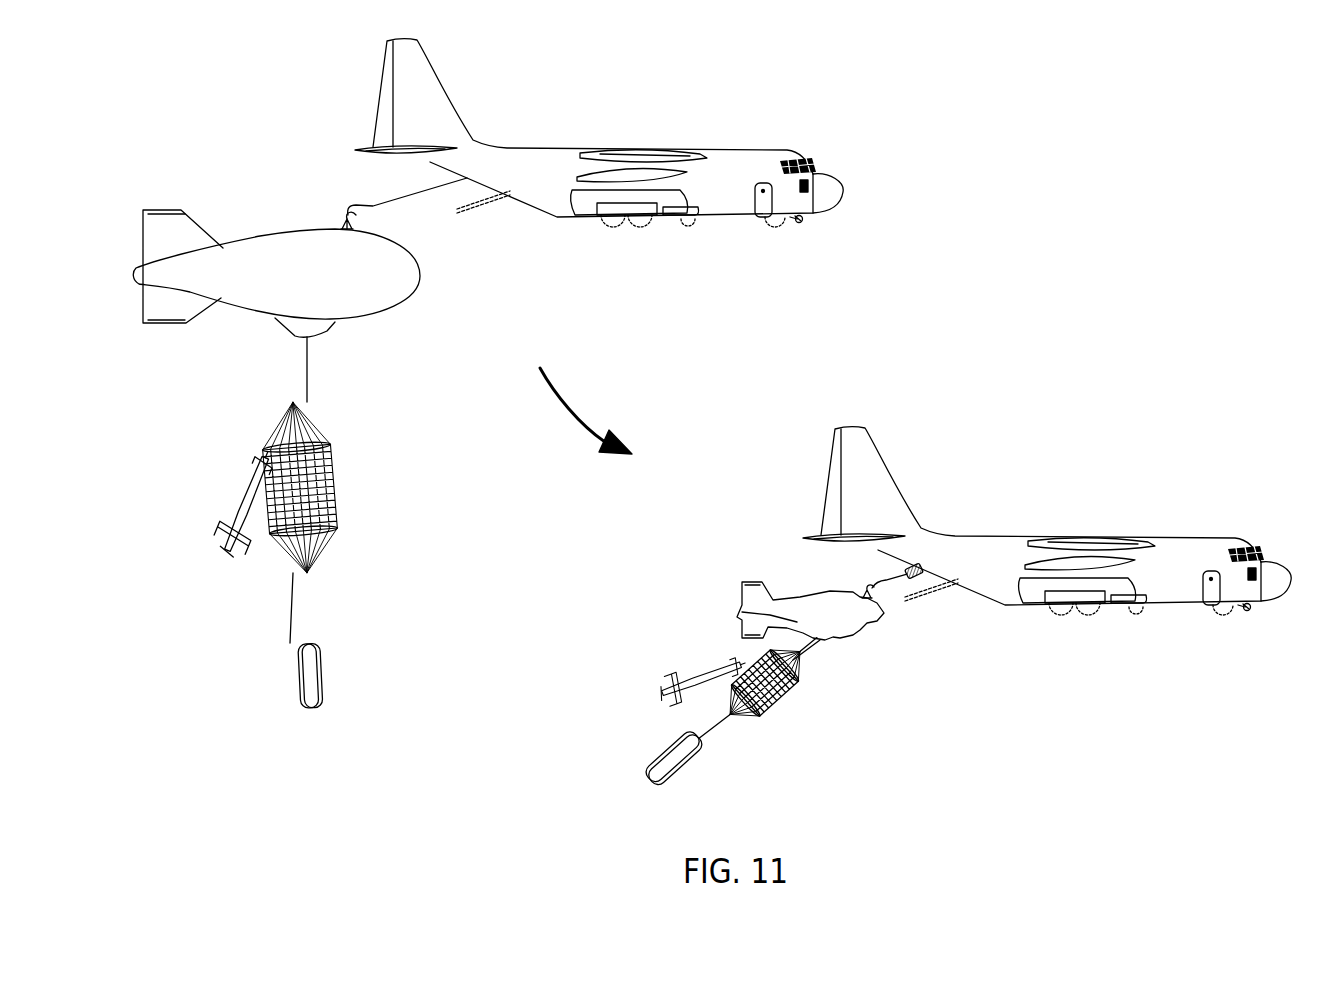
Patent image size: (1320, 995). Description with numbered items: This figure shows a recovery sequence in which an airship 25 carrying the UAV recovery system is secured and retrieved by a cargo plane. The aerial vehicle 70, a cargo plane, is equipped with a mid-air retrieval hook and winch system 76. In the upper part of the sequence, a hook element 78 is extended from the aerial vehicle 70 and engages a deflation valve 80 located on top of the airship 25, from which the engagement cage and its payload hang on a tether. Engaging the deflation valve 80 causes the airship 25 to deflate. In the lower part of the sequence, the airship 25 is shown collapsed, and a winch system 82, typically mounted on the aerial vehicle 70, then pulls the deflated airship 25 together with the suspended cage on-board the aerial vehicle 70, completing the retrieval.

The airship 25 is at (333, 274).
The aerial vehicle 70 is at (527, 158).
The mid-air retrieval hook and winch system 76 is at (338, 190).
The hook element 78 is at (343, 213).
The deflation valve 80 is at (338, 228).
The winch system 82 is at (918, 562).